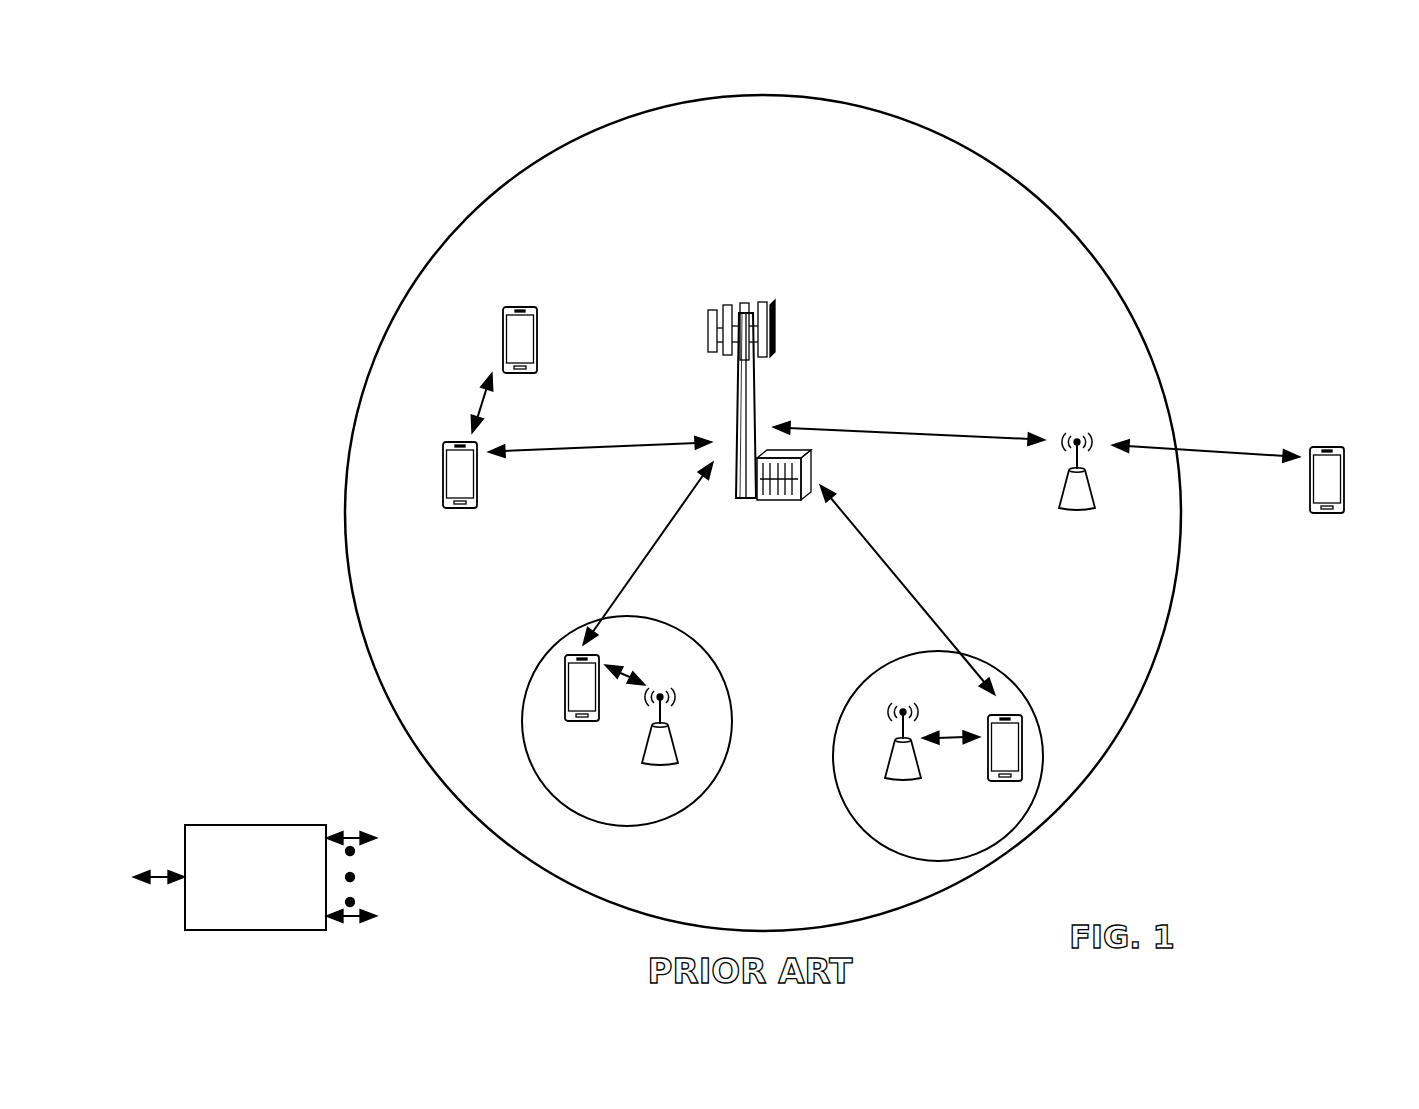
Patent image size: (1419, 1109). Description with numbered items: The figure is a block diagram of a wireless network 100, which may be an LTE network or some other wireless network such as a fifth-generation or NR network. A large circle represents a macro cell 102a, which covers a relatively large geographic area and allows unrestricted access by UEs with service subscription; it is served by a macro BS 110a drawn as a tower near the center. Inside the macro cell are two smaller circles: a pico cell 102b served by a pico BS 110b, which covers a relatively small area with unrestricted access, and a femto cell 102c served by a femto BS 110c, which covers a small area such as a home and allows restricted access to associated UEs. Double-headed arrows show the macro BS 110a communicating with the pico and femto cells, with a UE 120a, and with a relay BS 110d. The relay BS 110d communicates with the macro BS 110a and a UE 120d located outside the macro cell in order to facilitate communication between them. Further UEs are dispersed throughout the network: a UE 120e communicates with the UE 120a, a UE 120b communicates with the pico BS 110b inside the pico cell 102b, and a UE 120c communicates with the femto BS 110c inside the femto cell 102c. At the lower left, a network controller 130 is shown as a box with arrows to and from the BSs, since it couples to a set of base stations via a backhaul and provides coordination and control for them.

The wireless network 100 is at (232, 88).
The macro cell 102a is at (1040, 200).
The pico cell 102b is at (715, 662).
The femto cell 102c is at (867, 667).
The macro BS 110a is at (745, 292).
The pico BS 110b is at (685, 750).
The femto BS 110c is at (881, 766).
The relay BS 110d is at (1077, 435).
The UE 120a is at (443, 470).
The UE 120b is at (572, 724).
The UE 120c is at (990, 782).
The UE 120d is at (1338, 447).
The UE 120e is at (503, 324).
The network controller 130 is at (253, 825).